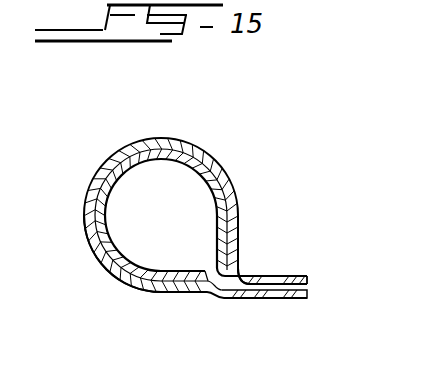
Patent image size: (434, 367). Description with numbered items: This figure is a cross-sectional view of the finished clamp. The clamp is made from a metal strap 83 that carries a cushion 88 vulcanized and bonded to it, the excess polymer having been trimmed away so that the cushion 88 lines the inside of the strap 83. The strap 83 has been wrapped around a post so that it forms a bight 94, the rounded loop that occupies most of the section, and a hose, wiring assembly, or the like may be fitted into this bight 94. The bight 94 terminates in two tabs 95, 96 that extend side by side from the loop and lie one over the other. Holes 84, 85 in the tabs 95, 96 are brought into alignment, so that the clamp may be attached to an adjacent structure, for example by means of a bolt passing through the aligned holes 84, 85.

The strap 83 is at (215, 163).
The hole 84 is at (265, 280).
The hole 85 is at (280, 299).
The cushion 88 is at (115, 257).
The bight 94 is at (80, 180).
The tab 95 is at (217, 298).
The tab 96 is at (303, 280).